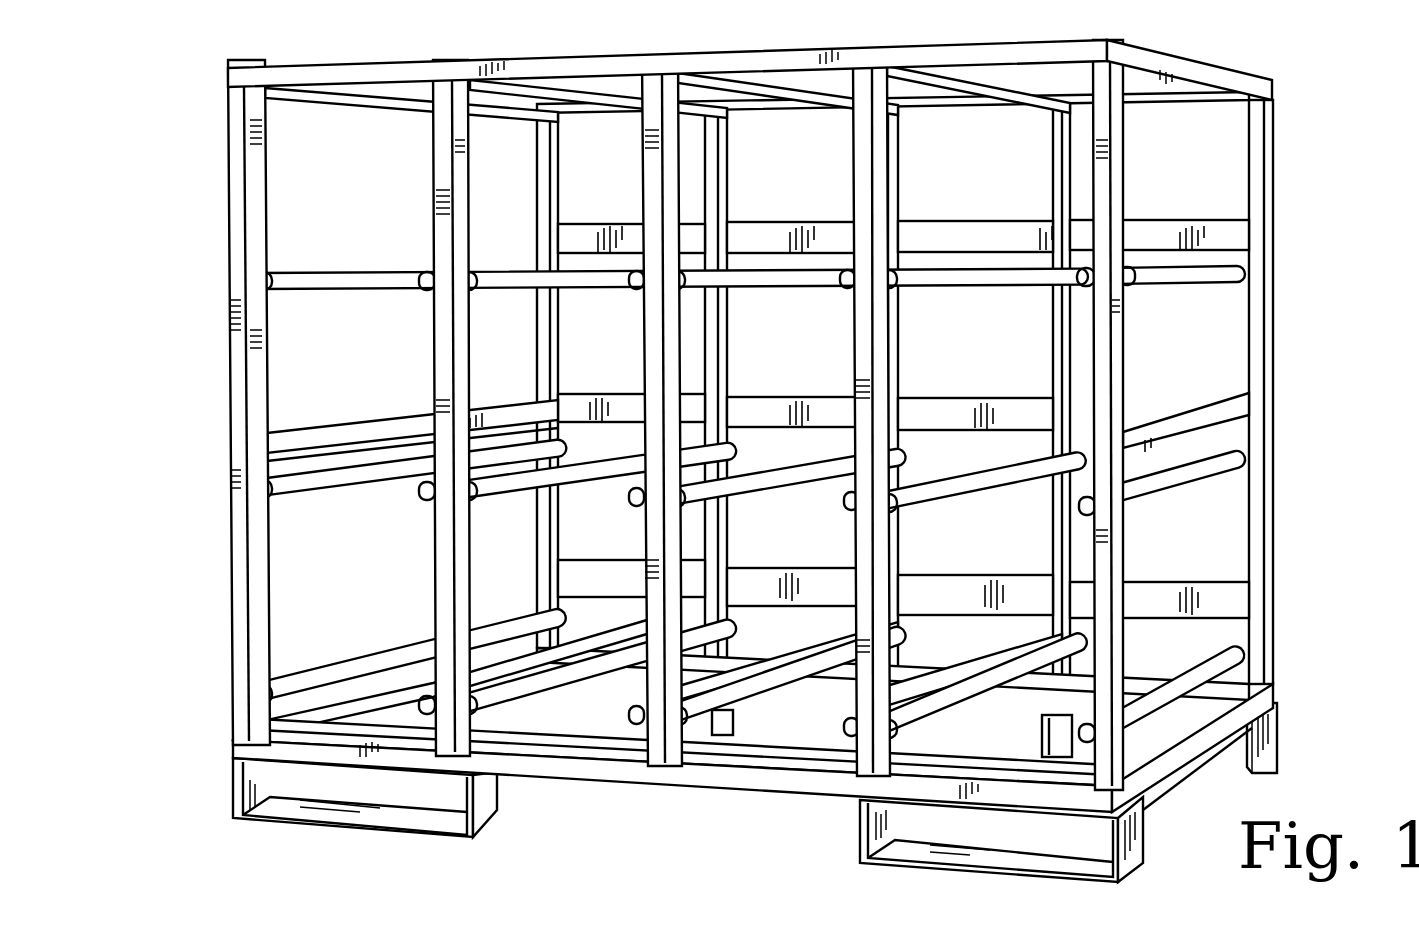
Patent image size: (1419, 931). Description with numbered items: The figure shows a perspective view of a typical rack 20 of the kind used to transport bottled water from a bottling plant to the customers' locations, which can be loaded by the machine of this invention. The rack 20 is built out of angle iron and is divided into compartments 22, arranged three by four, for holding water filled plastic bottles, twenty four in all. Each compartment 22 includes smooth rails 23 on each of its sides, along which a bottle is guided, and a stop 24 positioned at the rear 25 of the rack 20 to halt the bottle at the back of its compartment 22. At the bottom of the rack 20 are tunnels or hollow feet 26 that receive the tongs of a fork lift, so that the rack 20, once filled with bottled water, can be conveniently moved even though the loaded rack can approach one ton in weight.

The rack 20 is at (764, 461).
The compartments 22 is at (262, 616).
The smooth rails 23 is at (392, 660).
The stop 24 is at (1208, 582).
The rear 25 is at (1283, 230).
The hollow feet 26 is at (1278, 738).